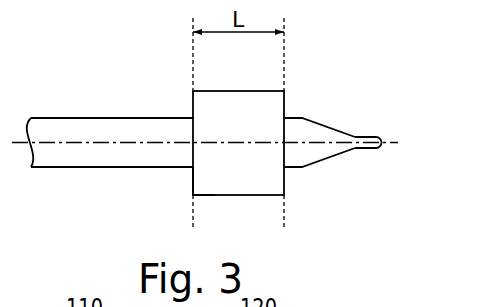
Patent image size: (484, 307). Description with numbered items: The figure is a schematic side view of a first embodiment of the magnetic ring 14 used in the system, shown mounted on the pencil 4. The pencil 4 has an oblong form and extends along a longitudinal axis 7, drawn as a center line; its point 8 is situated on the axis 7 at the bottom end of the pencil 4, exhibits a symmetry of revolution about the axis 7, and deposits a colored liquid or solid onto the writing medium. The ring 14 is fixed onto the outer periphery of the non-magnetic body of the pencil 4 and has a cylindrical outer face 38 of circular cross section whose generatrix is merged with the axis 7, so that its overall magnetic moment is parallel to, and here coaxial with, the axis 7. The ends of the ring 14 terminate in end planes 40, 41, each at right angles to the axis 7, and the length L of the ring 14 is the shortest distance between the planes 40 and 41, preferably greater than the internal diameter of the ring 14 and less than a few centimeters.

The pencil 4 is at (93, 108).
The longitudinal axis 7 is at (389, 143).
The point 8 is at (364, 137).
The ring 14 is at (184, 193).
The cylindrical outer face 38 is at (248, 184).
The end plane 40 is at (193, 58).
The end plane 41 is at (284, 58).